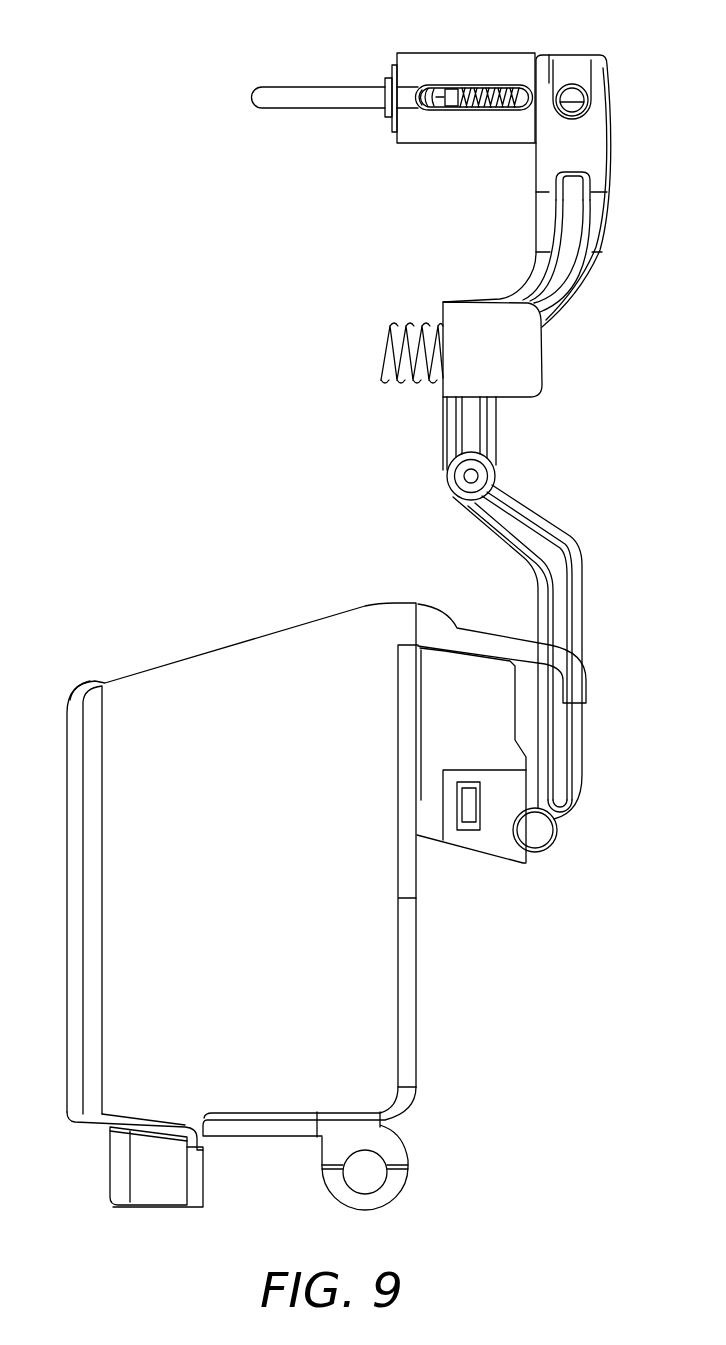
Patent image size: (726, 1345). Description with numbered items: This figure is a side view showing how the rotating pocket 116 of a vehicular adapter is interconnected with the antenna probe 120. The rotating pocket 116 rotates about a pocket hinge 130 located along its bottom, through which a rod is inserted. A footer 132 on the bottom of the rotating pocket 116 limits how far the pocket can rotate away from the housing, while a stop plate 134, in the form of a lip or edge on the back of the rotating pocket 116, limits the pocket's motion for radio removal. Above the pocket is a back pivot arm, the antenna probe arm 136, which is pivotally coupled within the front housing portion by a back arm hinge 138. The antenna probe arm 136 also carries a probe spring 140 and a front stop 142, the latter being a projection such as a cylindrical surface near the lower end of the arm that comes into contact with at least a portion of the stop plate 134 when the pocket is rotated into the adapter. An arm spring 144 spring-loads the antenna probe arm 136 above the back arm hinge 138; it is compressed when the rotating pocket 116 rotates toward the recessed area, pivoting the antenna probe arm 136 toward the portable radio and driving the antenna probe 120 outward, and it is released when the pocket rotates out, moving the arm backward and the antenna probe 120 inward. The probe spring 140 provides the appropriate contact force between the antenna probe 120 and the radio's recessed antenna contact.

The rotating pocket 116 is at (147, 663).
The antenna probe 120 is at (327, 110).
The pocket hinge 130 is at (410, 1183).
The footer 132 is at (147, 1167).
The stop plate 134 is at (482, 636).
The antenna probe arm 136 is at (566, 535).
The back arm hinge 138 is at (447, 476).
The probe spring 140 is at (497, 85).
The front stop 142 is at (540, 838).
The arm spring 144 is at (420, 325).